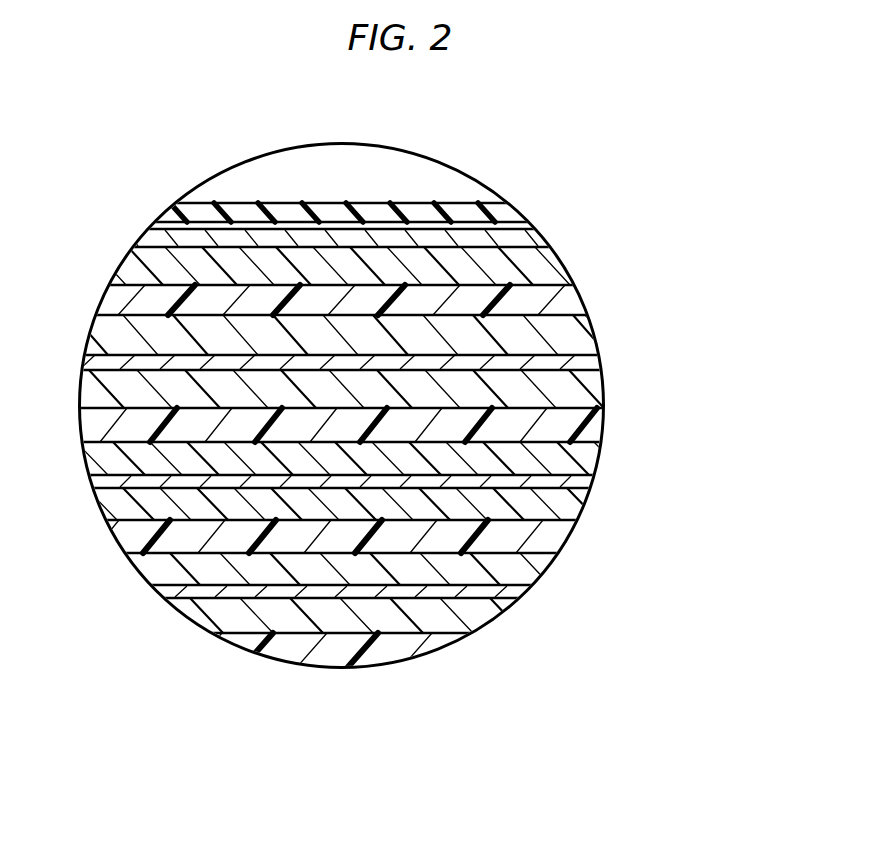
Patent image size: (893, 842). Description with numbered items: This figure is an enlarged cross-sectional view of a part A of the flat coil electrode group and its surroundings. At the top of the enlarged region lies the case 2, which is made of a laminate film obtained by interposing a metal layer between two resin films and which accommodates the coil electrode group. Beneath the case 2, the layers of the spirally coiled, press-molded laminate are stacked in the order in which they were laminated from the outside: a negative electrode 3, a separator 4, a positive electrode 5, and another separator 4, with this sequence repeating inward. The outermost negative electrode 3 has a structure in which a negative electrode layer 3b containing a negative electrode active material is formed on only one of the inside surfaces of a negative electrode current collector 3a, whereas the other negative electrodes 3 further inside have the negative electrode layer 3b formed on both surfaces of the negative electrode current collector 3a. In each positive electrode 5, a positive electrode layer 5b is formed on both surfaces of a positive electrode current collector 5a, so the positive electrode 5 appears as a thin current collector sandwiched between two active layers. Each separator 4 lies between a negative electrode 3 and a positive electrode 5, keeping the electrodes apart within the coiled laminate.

The part A is at (219, 188).
The case 2 is at (505, 208).
The negative electrode 3 is at (667, 170).
The negative electrode current collector 3a is at (513, 237).
The negative electrode layer 3b is at (543, 266).
The separator 4 is at (118, 298).
The positive electrode 5 is at (707, 283).
The positive electrode current collector 5a is at (577, 362).
The positive electrode layer 5b is at (590, 325).